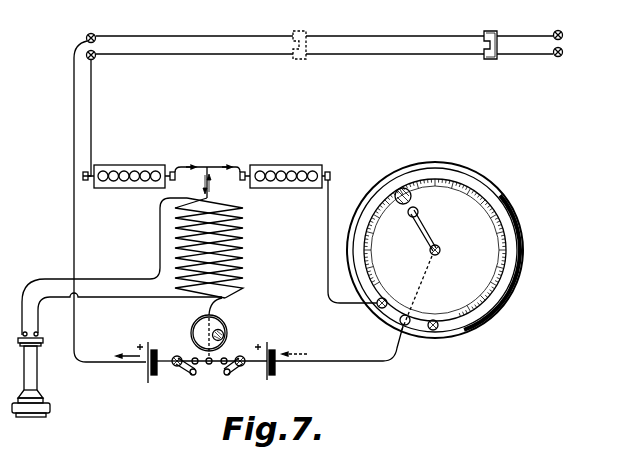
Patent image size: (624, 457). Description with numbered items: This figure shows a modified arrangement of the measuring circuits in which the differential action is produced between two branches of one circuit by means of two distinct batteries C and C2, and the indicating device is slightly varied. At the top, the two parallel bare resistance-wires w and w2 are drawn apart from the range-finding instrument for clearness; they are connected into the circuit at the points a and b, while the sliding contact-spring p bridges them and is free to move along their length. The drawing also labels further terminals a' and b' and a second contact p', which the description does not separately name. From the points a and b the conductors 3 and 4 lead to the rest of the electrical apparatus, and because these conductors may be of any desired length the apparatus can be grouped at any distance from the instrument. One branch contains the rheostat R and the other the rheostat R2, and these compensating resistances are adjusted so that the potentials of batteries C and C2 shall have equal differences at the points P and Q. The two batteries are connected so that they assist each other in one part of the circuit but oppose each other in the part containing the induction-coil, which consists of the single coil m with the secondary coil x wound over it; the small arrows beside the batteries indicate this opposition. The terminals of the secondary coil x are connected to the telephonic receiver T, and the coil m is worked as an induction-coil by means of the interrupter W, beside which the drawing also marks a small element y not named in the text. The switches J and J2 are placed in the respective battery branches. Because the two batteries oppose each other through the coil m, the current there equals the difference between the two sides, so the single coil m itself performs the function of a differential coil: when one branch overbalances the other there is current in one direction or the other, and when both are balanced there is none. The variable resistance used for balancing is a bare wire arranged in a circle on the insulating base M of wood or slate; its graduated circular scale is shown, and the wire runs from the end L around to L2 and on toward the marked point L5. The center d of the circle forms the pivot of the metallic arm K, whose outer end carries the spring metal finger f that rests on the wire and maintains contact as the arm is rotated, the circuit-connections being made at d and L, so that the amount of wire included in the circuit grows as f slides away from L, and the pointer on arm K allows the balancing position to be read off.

The connection point a is at (95, 32).
The connection point b is at (95, 62).
The line terminal a' is at (566, 30).
The line terminal b' is at (566, 56).
The conductor 3 is at (103, 201).
The conductor 4 is at (93, 118).
The parallel wire w is at (324, 28).
The parallel wire w2 is at (324, 61).
The plug p' is at (300, 54).
The sliding contact-spring p is at (490, 54).
The rheostat R is at (129, 186).
The rheostat R2 is at (308, 234).
The circuit point P is at (207, 174).
The secondary coil x is at (209, 247).
The coil m is at (208, 248).
The telephonic receiver T is at (33, 374).
The battery C is at (146, 362).
The battery C2 is at (321, 355).
The circuit point Q is at (208, 350).
The switch J is at (184, 360).
The switch J2 is at (234, 360).
The interrupter W is at (193, 331).
The eccentric pin y is at (224, 330).
The base M is at (520, 250).
The resistance-wire L2 is at (470, 183).
The metallic arm K is at (424, 229).
The center of the circle d is at (426, 288).
The spring metal finger f is at (400, 188).
The end of resistance-wire L is at (387, 301).
The terminal L5 is at (430, 322).